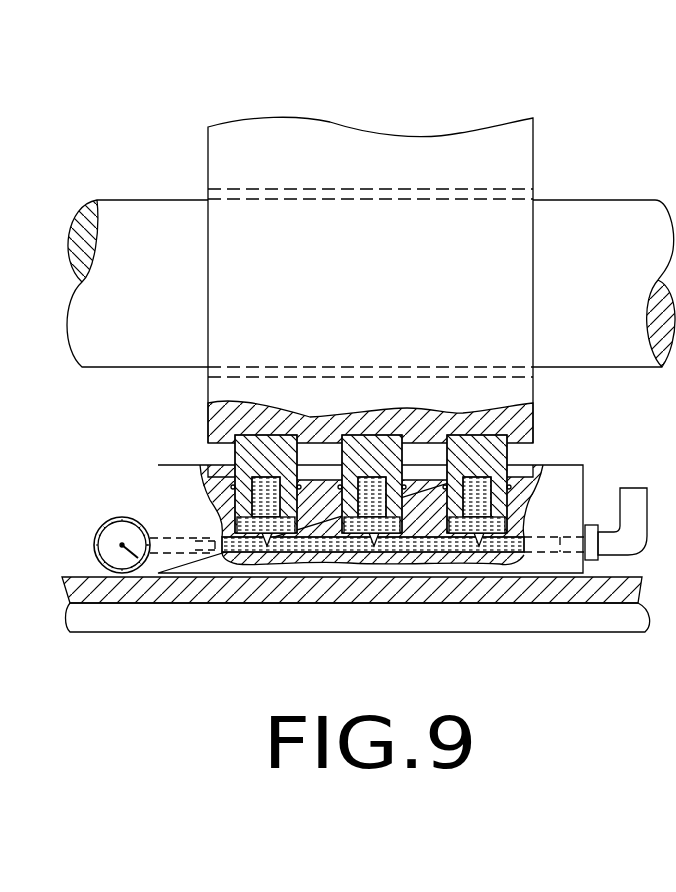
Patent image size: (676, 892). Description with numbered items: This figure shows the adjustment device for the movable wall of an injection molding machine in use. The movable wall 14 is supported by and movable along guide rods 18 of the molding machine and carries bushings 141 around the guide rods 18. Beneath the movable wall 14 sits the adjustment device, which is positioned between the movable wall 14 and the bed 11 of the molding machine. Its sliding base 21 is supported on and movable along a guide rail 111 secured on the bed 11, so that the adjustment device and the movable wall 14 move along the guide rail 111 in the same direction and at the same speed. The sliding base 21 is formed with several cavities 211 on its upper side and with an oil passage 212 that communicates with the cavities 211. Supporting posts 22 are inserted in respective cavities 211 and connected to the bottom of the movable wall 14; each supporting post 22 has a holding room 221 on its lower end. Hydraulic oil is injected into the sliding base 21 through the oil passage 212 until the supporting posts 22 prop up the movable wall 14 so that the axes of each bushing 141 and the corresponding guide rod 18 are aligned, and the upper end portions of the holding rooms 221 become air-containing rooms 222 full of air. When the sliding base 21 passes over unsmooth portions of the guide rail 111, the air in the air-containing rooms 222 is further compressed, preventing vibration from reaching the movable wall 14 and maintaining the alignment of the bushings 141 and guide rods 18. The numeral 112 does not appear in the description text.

The bed 11 is at (158, 618).
The guide rail 111 is at (95, 590).
The base plate 112 is at (415, 600).
The movable wall 14 is at (222, 160).
The bushing 141 is at (537, 197).
The guide rod 18 is at (577, 215).
The sliding base 21 is at (570, 482).
The cavity 211 is at (497, 523).
The oil passage 212 is at (547, 550).
The supporting post 22 is at (208, 442).
The holding room 221 is at (222, 513).
The air-containing room 222 is at (483, 470).